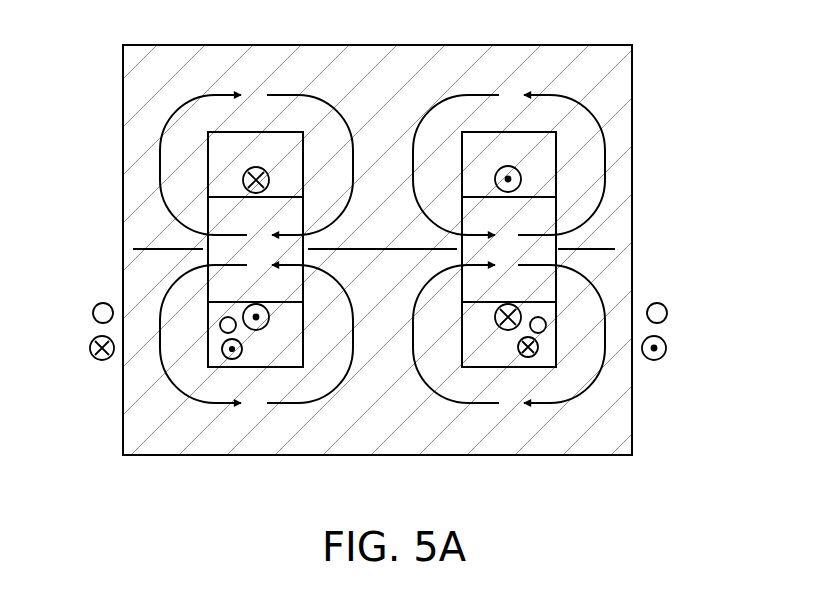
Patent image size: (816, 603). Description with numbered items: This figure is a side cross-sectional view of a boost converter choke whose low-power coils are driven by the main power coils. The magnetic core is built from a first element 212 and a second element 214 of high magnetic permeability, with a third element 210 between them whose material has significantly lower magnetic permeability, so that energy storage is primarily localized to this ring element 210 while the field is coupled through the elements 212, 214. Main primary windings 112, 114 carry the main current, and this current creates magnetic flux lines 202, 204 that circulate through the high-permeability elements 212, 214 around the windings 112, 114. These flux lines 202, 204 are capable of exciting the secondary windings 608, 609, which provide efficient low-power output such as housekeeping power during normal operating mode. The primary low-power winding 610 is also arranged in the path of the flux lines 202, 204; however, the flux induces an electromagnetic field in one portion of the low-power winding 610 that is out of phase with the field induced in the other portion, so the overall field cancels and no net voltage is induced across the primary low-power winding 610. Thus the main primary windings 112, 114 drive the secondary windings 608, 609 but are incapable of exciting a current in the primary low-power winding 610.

The main primary winding L1 112 is at (244, 173).
The main primary winding L2 114 is at (262, 329).
The magnetic flux line 202 is at (297, 94).
The magnetic flux line 204 is at (207, 403).
The third element 210 is at (238, 296).
The first element 212 is at (360, 81).
The second element 214 is at (360, 431).
The secondary winding L4 608 is at (224, 357).
The secondary winding L5 609 is at (535, 354).
The primary low-power winding L3 610 is at (101, 303).